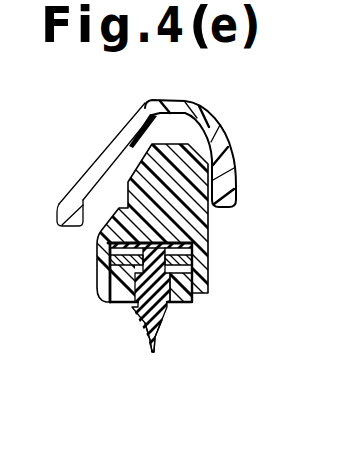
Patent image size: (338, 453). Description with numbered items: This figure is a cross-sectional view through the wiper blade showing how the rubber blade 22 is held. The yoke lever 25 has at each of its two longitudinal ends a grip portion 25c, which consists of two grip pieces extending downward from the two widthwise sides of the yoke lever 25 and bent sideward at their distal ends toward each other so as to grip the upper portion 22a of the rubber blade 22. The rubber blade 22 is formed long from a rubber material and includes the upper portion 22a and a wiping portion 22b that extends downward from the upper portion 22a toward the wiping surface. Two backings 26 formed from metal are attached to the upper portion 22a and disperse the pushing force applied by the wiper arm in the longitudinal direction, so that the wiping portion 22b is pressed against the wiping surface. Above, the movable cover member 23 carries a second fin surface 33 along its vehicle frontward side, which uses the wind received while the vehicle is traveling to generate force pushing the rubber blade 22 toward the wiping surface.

The rubber blade 22 is at (139, 339).
The upper portion 22a is at (112, 283).
The wiping portion 22b is at (158, 350).
The movable cover member 23 is at (174, 99).
The yoke lever 25 is at (208, 222).
The grip portion 25c is at (190, 288).
The backing 26 is at (110, 258).
The second fin surface 33 is at (116, 142).